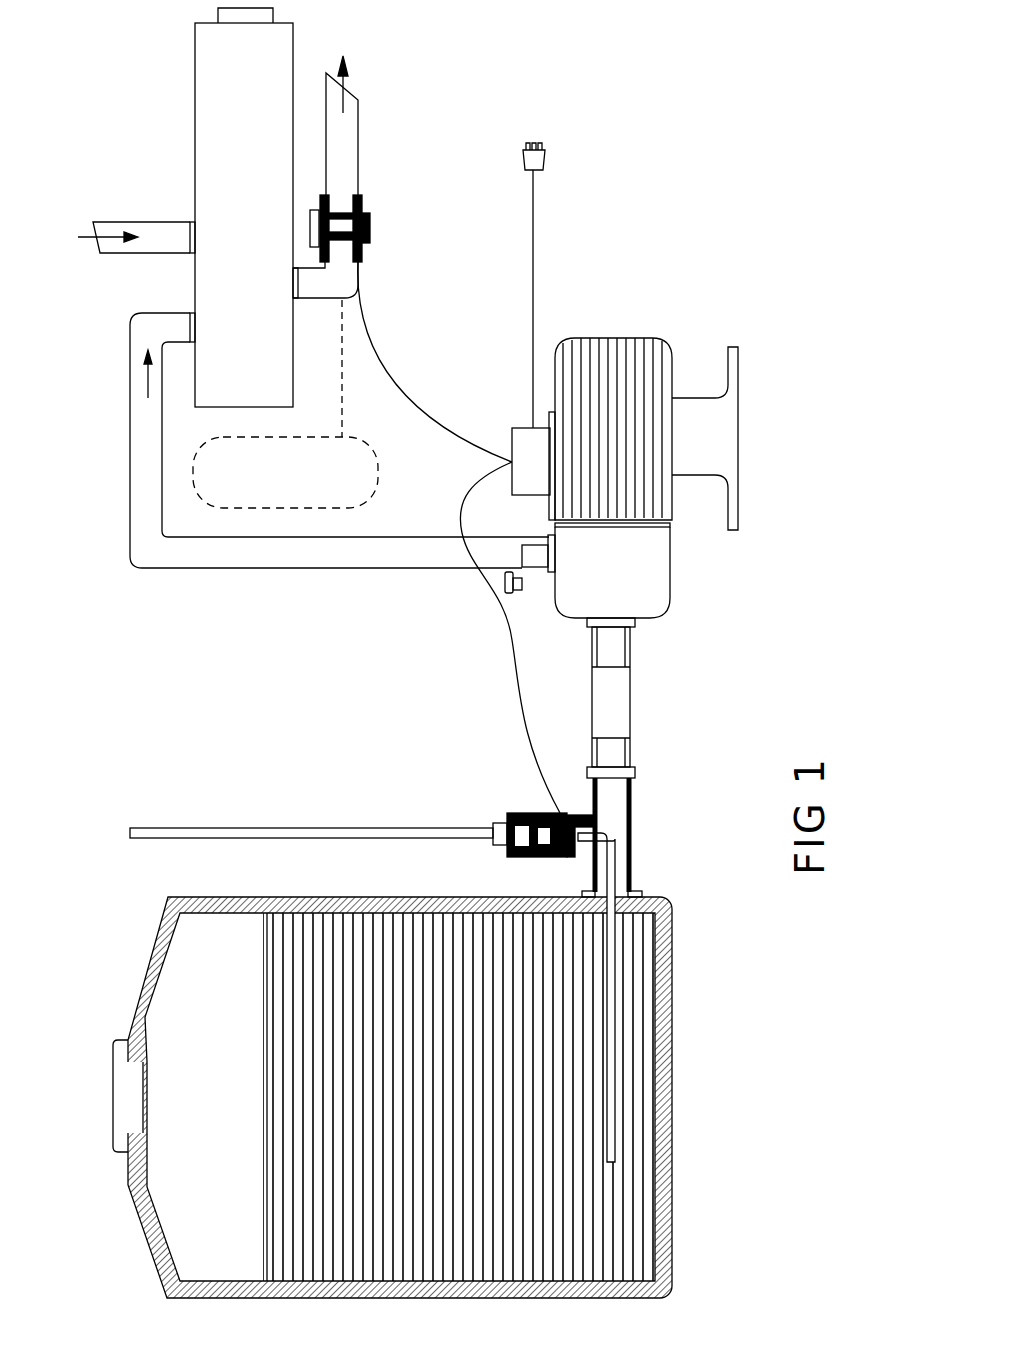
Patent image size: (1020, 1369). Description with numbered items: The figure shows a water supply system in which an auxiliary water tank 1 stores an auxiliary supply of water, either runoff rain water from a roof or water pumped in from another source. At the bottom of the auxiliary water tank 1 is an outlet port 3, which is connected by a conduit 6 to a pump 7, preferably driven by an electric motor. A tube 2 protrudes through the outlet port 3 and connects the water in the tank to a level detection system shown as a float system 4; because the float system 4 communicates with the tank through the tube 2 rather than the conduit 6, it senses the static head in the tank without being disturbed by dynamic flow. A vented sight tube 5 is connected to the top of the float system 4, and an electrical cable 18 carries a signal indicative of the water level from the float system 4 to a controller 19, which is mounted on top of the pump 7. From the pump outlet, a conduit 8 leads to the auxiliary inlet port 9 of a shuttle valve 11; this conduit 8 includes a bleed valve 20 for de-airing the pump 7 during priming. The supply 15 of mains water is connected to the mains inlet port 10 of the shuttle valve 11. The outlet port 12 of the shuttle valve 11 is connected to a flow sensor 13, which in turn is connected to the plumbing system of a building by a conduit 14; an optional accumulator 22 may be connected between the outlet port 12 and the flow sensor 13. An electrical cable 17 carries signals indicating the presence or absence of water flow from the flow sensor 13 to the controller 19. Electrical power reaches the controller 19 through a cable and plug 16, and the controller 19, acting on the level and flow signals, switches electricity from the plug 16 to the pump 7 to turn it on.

The auxiliary water tank 1 is at (147, 1242).
The tube 2 is at (608, 1002).
The outlet port 3 is at (638, 892).
The float system 4 is at (538, 815).
The vented sight tube 5 is at (312, 828).
The conduit 6 is at (631, 697).
The pump 7 is at (672, 590).
The conduit 8 is at (348, 568).
The auxiliary inlet port 9 is at (190, 313).
The mains inlet port 10 is at (190, 222).
The shuttle valve 11 is at (205, 135).
The outlet port 12 is at (297, 300).
The flow sensor 13 is at (365, 198).
The conduit 14 is at (353, 90).
The supply of mains water 15 is at (93, 233).
The cable and plug 16 is at (523, 158).
The electrical cable 17 is at (402, 375).
The electrical cable 18 is at (462, 505).
The controller 19 is at (512, 428).
The bleed valve 20 is at (508, 595).
The accumulator 22 is at (200, 495).